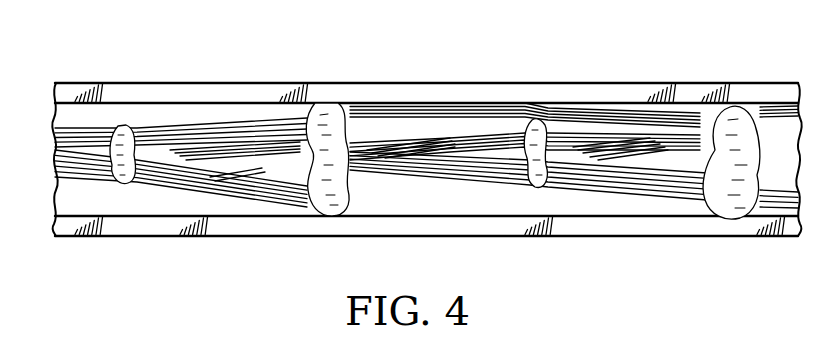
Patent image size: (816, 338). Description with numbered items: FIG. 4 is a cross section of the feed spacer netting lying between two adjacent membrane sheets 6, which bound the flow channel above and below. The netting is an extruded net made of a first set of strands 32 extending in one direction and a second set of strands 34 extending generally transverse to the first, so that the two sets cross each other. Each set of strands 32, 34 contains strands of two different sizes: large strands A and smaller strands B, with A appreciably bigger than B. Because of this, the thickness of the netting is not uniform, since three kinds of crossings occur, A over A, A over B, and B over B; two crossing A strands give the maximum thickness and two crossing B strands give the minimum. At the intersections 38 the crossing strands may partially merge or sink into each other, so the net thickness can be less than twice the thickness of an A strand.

The membrane sheet 6 is at (700, 87).
The first set of strands 32 is at (593, 123).
The second set of strands 34 is at (227, 177).
The intersection 38 is at (640, 137).
The large strand A is at (350, 123).
The smaller strand B is at (213, 140).